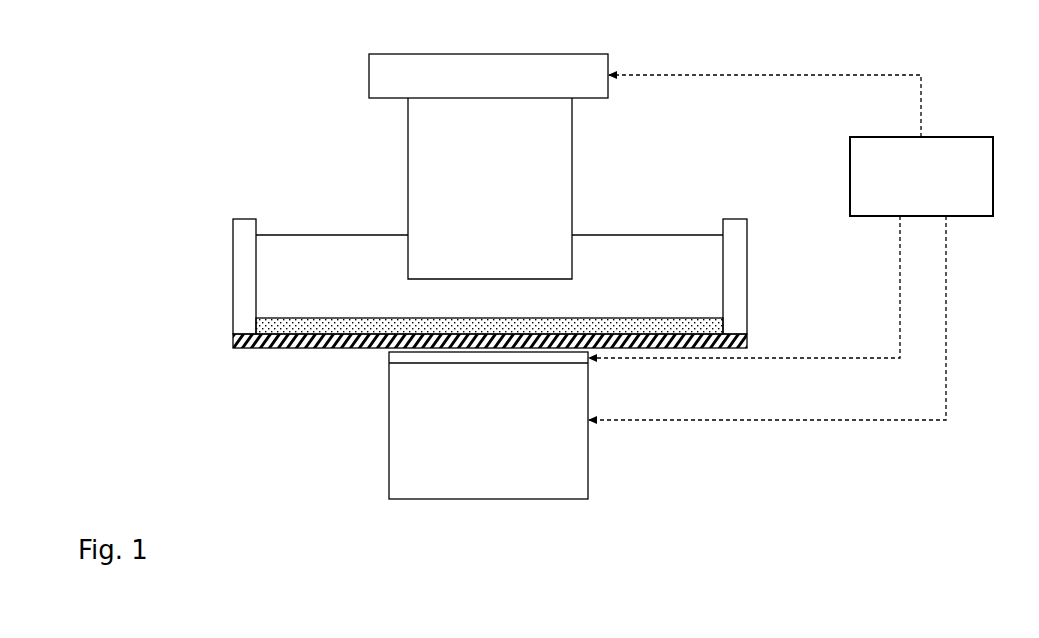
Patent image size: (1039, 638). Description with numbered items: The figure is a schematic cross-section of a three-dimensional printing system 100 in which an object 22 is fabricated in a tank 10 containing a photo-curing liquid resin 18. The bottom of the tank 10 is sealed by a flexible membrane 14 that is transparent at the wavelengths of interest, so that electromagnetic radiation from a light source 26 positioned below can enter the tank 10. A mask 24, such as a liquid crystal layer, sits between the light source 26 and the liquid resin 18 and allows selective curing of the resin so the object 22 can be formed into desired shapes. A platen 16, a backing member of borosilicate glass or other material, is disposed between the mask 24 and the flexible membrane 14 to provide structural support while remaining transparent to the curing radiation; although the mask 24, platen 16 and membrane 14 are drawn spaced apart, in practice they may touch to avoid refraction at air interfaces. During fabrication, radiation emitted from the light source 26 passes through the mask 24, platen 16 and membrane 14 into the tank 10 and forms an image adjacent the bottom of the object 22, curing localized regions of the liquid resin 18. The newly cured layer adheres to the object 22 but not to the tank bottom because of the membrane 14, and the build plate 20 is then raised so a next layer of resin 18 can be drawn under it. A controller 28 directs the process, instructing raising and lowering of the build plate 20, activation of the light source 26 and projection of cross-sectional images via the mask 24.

The 3D printing system 100 is at (238, 117).
The tank 10 is at (238, 236).
The flexible membrane 14 is at (258, 326).
The platen 16 is at (291, 350).
The photo-curing liquid resin 18 is at (689, 279).
The build plate 20 is at (500, 89).
The object 22 is at (500, 201).
The mask 24 is at (401, 357).
The light source 26 is at (500, 444).
The controller 28 is at (933, 188).